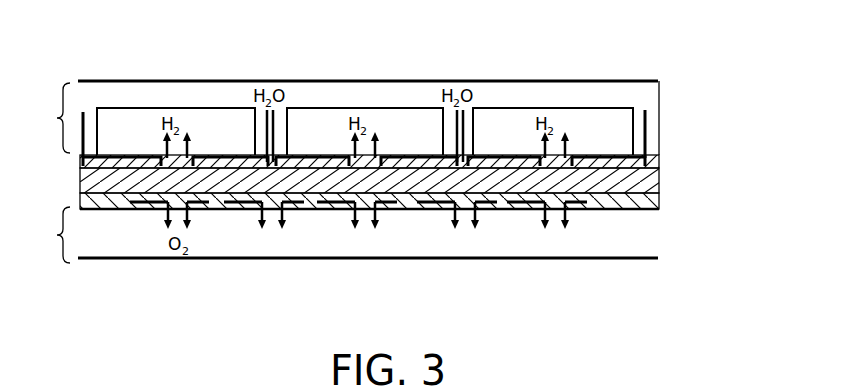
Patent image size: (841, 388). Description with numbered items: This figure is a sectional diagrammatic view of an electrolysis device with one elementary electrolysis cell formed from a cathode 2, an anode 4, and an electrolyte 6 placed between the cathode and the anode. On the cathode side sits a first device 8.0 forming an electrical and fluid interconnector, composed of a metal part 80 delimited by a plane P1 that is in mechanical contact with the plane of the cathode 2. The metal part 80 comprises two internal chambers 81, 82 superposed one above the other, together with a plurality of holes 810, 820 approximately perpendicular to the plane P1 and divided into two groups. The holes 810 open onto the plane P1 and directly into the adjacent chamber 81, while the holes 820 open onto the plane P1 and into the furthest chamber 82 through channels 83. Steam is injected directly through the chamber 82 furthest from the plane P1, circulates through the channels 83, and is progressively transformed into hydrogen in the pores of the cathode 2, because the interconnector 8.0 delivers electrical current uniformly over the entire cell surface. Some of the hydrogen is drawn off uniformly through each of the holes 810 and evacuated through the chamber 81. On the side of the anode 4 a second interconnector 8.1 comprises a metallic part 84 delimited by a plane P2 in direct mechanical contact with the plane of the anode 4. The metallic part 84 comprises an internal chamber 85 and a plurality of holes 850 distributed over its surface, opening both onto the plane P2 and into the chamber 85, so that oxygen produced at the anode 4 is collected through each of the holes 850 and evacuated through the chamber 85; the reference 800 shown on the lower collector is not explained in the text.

The metal part 80 is at (55, 120).
The internal chamber 82 is at (160, 92).
The holes 810 is at (188, 150).
The channels 83 is at (274, 126).
The internal chamber 81 is at (400, 118).
The first device 8.0 is at (670, 100).
The plane P1 is at (645, 158).
The cathode 2 is at (650, 163).
The anode 4 is at (648, 197).
The electrolyte 6 is at (606, 196).
The plane P2 is at (633, 205).
The holes 820 is at (80, 150).
The metallic part 84 is at (48, 235).
The lower current collector with outlet 800 is at (162, 212).
The holes 850 is at (377, 210).
The internal chamber 85 is at (510, 245).
The second interconnector 8.1 is at (665, 249).